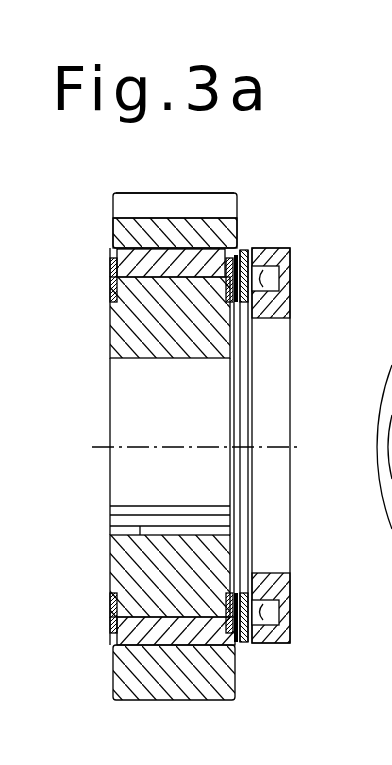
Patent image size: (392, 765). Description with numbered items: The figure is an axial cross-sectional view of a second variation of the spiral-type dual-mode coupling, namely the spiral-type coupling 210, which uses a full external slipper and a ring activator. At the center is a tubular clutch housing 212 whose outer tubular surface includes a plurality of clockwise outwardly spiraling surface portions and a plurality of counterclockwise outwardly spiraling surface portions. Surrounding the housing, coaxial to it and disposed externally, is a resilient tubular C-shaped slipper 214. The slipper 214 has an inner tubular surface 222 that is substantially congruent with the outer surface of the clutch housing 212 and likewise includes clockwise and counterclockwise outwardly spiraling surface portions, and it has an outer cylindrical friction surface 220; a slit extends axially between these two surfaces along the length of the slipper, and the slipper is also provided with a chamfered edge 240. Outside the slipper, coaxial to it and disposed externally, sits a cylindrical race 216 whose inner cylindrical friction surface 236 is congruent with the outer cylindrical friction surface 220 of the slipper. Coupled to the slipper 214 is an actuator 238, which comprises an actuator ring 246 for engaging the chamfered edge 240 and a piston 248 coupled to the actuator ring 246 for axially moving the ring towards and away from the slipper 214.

The spiral-type coupling 210 is at (66, 469).
The tubular clutch housing 212 is at (135, 332).
The resilient tubular C-shaped slipper 214 is at (140, 256).
The cylindrical race 216 is at (130, 233).
The outer cylindrical friction surface 220 is at (142, 649).
The inner tubular surface 222 is at (135, 616).
The inner cylindrical friction surface 236 is at (182, 213).
The actuator 238 is at (263, 265).
The chamfered edge 240 is at (233, 248).
The actuator ring 246 is at (250, 640).
The piston 248 is at (265, 612).